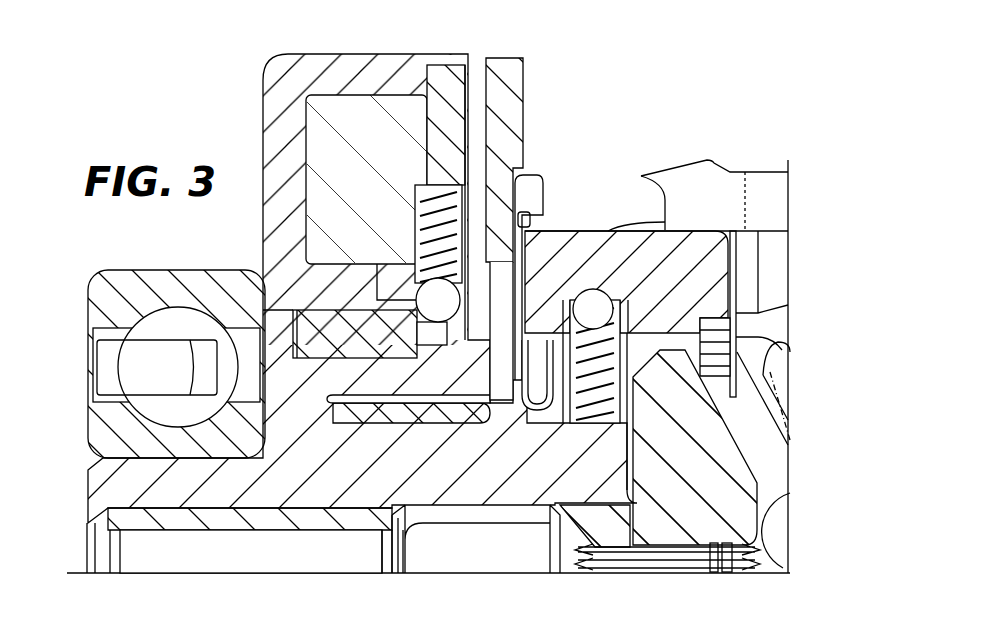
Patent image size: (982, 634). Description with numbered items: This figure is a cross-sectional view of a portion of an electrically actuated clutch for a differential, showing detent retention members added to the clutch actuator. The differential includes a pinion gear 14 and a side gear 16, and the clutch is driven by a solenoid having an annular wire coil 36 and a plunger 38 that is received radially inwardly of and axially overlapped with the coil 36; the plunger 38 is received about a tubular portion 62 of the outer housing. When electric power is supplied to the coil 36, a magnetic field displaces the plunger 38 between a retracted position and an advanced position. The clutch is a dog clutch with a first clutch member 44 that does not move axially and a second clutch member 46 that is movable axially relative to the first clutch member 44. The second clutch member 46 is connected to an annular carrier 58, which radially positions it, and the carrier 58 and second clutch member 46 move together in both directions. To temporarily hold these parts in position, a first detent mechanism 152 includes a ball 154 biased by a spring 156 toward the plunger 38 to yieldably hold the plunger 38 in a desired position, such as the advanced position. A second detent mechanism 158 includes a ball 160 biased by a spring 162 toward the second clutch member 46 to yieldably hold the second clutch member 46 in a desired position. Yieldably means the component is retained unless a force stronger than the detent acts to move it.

The pinion gear 14 is at (775, 368).
The side gear 16 is at (645, 522).
The annular wire coil 36 is at (378, 116).
The plunger 38 is at (355, 393).
The first clutch member 44 is at (772, 258).
The second clutch member 46 is at (656, 261).
The carrier 58 is at (514, 92).
The tubular portion 62 is at (167, 480).
The first detent mechanism 152 is at (406, 223).
The ball 154 is at (432, 298).
The spring 156 is at (443, 215).
The second detent mechanism 158 is at (580, 424).
The ball 160 is at (596, 300).
The spring 162 is at (606, 324).